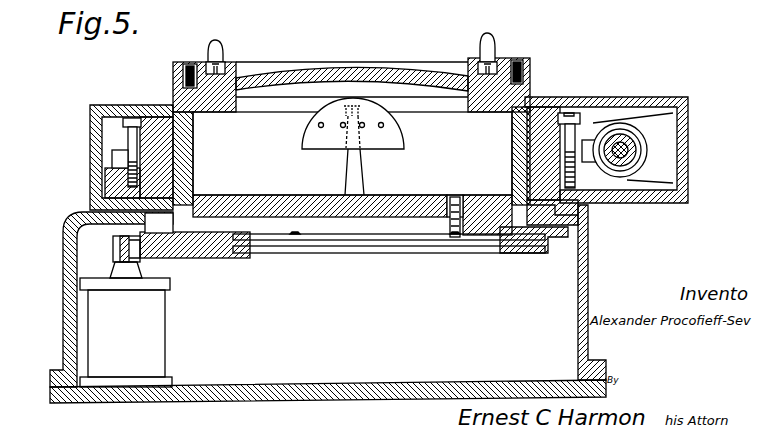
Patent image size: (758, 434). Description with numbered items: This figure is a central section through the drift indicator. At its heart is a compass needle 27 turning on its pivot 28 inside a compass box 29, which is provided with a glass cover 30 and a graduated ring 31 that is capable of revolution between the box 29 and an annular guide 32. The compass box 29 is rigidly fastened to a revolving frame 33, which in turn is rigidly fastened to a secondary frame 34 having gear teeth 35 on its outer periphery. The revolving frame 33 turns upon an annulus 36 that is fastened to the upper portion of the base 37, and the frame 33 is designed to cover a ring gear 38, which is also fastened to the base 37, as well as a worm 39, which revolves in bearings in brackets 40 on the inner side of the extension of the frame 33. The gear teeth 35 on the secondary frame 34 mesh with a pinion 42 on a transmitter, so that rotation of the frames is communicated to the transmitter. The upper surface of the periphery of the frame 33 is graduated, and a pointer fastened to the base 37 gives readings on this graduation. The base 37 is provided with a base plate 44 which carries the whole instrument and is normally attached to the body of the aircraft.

The compass needle 27 is at (393, 133).
The pivot 28 is at (358, 177).
The compass box 29 is at (198, 167).
The glass cover 30 is at (360, 69).
The graduated ring 31 is at (228, 62).
The annular guide 32 is at (198, 62).
The revolving frame 33 is at (245, 240).
The secondary frame 34 is at (196, 260).
The gear teeth 35 is at (568, 256).
The annulus 36 is at (157, 112).
The base 37 is at (67, 276).
The ring gear 38 is at (112, 154).
The worm 39 is at (625, 170).
The brackets 40 is at (666, 128).
The pinion 42 is at (113, 250).
The base plate 44 is at (460, 397).